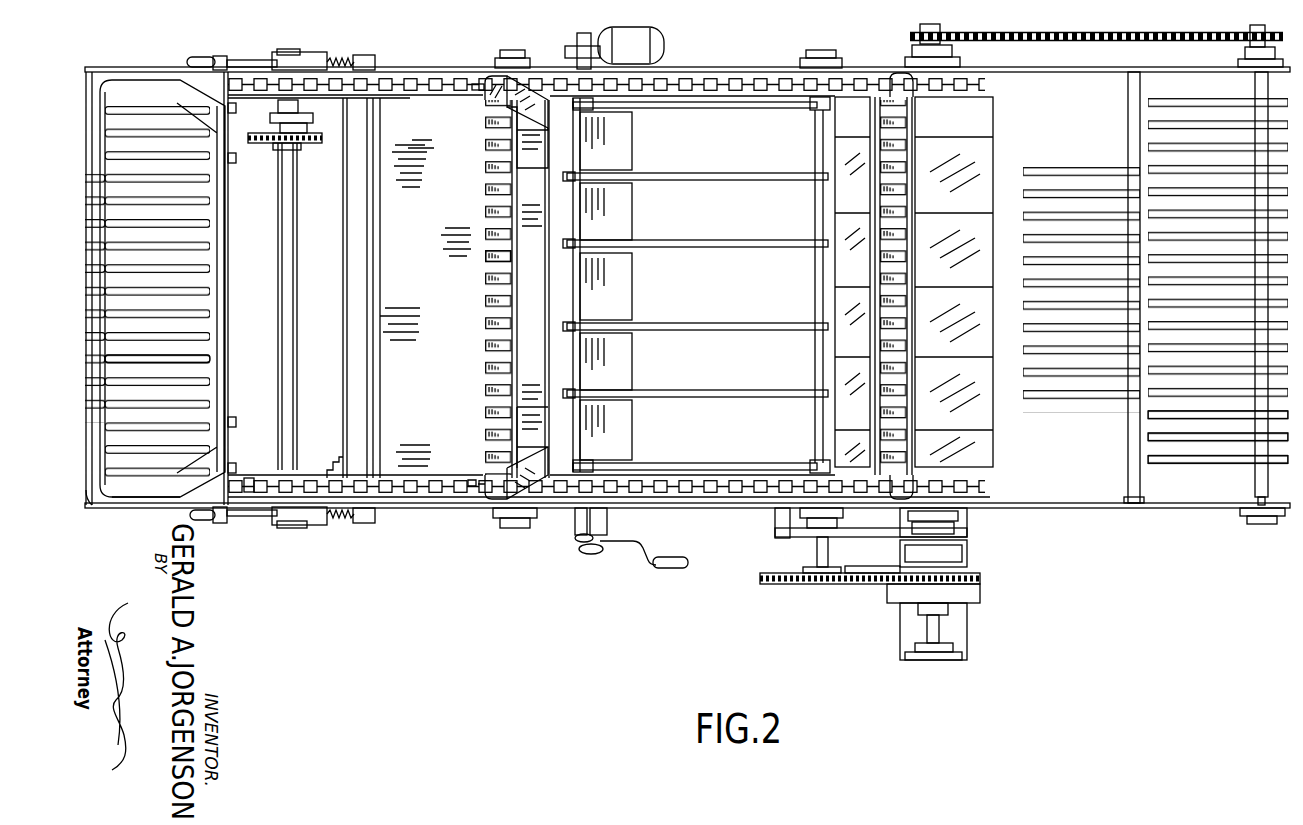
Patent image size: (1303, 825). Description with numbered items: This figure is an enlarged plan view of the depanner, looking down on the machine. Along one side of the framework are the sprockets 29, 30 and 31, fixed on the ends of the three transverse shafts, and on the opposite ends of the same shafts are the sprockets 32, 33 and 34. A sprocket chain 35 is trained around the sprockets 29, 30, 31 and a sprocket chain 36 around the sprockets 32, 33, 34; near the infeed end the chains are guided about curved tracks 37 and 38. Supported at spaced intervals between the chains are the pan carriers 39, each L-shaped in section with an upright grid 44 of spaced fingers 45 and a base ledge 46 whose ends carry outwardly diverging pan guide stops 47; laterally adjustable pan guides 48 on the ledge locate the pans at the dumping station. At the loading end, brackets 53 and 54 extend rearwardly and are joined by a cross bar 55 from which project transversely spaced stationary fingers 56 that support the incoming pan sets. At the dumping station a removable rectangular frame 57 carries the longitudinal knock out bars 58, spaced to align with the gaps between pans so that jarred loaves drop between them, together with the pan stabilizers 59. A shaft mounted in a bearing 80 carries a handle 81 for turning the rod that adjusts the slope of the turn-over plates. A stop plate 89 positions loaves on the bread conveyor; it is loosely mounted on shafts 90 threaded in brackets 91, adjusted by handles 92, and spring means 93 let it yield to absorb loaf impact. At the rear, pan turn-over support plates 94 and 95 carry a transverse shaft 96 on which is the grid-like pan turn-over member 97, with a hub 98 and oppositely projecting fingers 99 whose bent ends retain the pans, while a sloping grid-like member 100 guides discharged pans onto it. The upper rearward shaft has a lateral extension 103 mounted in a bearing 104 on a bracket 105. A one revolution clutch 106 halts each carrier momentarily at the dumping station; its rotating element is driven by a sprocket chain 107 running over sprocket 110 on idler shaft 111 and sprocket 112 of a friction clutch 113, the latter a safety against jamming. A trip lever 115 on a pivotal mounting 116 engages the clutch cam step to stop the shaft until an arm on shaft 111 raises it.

The sprocket 29 is at (250, 90).
The sprocket 30 is at (988, 80).
The sprocket 31 is at (476, 92).
The sprocket 32 is at (247, 478).
The sprocket 33 is at (998, 485).
The sprocket 34 is at (480, 480).
The sprocket chain 35 is at (400, 86).
The sprocket chain 36 is at (397, 480).
The curved track 37 is at (434, 150).
The curved track 38 is at (310, 478).
The pan carriers 39 is at (490, 258).
The grid 44 is at (498, 82).
The fingers 45 is at (490, 342).
The ledge 46 is at (530, 352).
The pan guide stops 47 is at (520, 500).
The pan guides 48 is at (533, 432).
The bracket 53 is at (100, 68).
The bracket 54 is at (177, 512).
The cross bar 55 is at (90, 497).
The stationary fingers 56 is at (200, 335).
The rectangular frame 57 is at (700, 465).
The knock out bars 58 is at (690, 180).
The pan stabilizers 59 is at (577, 325).
The bearing 80 is at (608, 521).
The handle 81 is at (676, 568).
The stop plate 89 is at (382, 255).
The shafts 90 is at (255, 522).
The brackets 91 is at (318, 527).
The handles 92 is at (207, 520).
The spring means 93 is at (345, 522).
The pan turn-over support plate 94 is at (1118, 505).
The pan turn-over support plate 95 is at (1065, 73).
The transverse shaft 96 is at (1257, 500).
The pan turn-over member 97 is at (1190, 470).
The hub 98 is at (1257, 78).
The fingers 99 is at (1150, 440).
The grid-like member 100 is at (1093, 170).
The shaft extension 103 is at (945, 625).
The bearing 104 is at (915, 647).
The bracket 105 is at (980, 602).
The one revolution clutch 106 is at (965, 553).
The sprocket chain 107 is at (860, 584).
The sprocket 110 is at (766, 584).
The idler shaft 111 is at (817, 558).
The sprocket 112 is at (982, 578).
The friction clutch 113 is at (888, 600).
The trip lever 115 is at (843, 537).
The pivotal mounting 116 is at (775, 525).